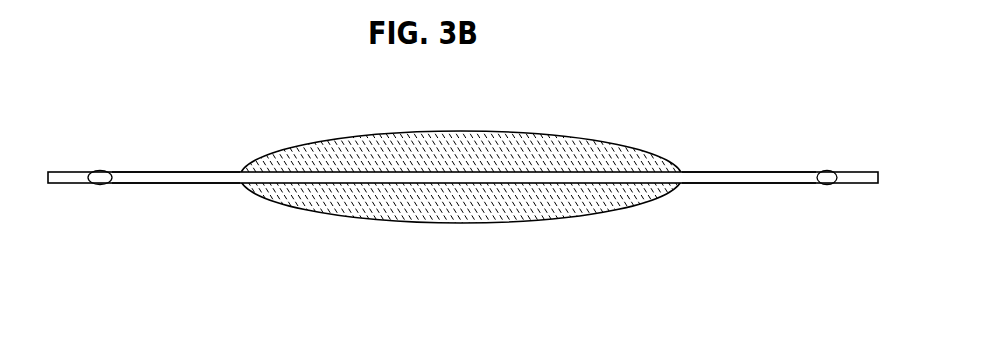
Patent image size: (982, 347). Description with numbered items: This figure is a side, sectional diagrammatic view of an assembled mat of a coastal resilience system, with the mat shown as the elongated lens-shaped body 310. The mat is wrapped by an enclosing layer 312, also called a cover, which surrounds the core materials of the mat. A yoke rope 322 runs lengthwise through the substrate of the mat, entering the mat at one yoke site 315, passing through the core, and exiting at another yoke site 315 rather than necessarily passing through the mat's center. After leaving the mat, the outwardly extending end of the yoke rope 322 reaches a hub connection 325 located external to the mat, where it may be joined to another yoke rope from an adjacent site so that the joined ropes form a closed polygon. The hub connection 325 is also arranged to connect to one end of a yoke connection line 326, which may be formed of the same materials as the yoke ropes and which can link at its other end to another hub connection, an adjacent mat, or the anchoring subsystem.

The catheter shaft 310 is at (351, 218).
The enclosing layer 312 is at (302, 133).
The yoke site 315 is at (689, 206).
The yoke rope 322 is at (170, 194).
The hub connection 325 is at (827, 201).
The yoke connection line 326 is at (63, 194).